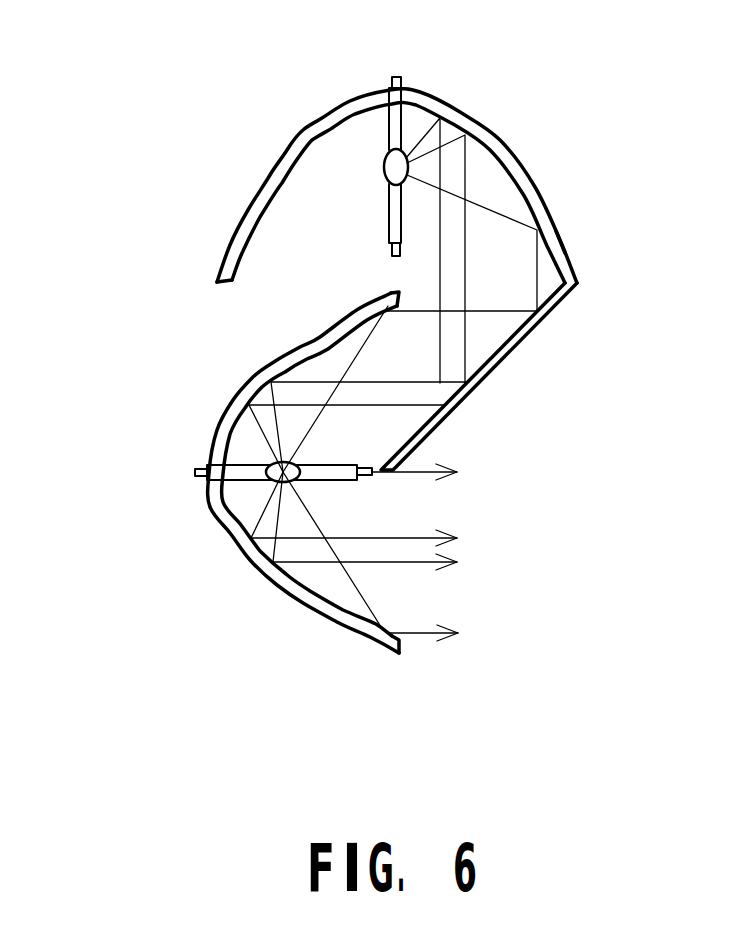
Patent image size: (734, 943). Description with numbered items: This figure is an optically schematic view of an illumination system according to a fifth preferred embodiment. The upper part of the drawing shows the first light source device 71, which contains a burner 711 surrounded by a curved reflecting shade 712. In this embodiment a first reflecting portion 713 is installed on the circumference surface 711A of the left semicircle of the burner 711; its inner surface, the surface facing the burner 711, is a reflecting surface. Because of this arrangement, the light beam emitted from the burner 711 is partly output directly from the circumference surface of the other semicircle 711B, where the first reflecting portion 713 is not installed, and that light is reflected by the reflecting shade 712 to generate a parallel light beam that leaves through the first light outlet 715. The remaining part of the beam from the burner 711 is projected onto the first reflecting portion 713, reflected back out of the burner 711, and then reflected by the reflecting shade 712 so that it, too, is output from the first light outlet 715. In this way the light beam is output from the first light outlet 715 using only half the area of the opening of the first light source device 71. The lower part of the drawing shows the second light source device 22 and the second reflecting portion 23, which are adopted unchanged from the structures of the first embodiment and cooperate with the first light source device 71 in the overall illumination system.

The first light source device 71 is at (467, 186).
The burner 711 is at (339, 192).
The circumference surface of a semicircle of the burner 711A is at (388, 178).
The circumference surface of another semicircle of the burner 711B is at (408, 163).
The reflecting shade 712 is at (557, 246).
The first reflecting portion 713 is at (387, 172).
The first light outlet 715 is at (492, 277).
The second light source device 22 is at (284, 598).
The second reflecting portion 23 is at (460, 395).